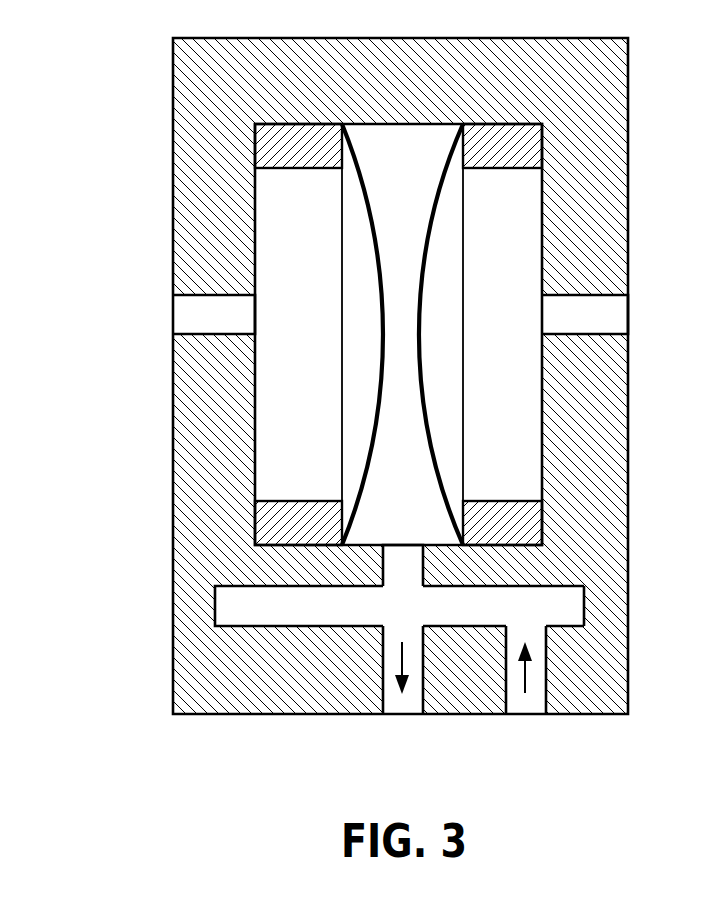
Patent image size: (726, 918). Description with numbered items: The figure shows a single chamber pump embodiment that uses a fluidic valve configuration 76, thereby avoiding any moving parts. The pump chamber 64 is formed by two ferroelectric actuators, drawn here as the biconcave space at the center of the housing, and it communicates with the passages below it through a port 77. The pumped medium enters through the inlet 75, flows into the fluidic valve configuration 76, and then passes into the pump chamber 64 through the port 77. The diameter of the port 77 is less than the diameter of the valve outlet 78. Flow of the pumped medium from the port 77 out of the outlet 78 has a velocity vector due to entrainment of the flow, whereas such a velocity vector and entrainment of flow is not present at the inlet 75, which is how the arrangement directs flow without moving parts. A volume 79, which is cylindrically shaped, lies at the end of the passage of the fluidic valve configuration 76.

The pump chamber 64 is at (402, 428).
The inlet 75 is at (522, 715).
The fluidic valve configuration 76 is at (290, 628).
The port 77 is at (403, 560).
The valve outlet 78 is at (397, 715).
The volume 79 is at (563, 607).